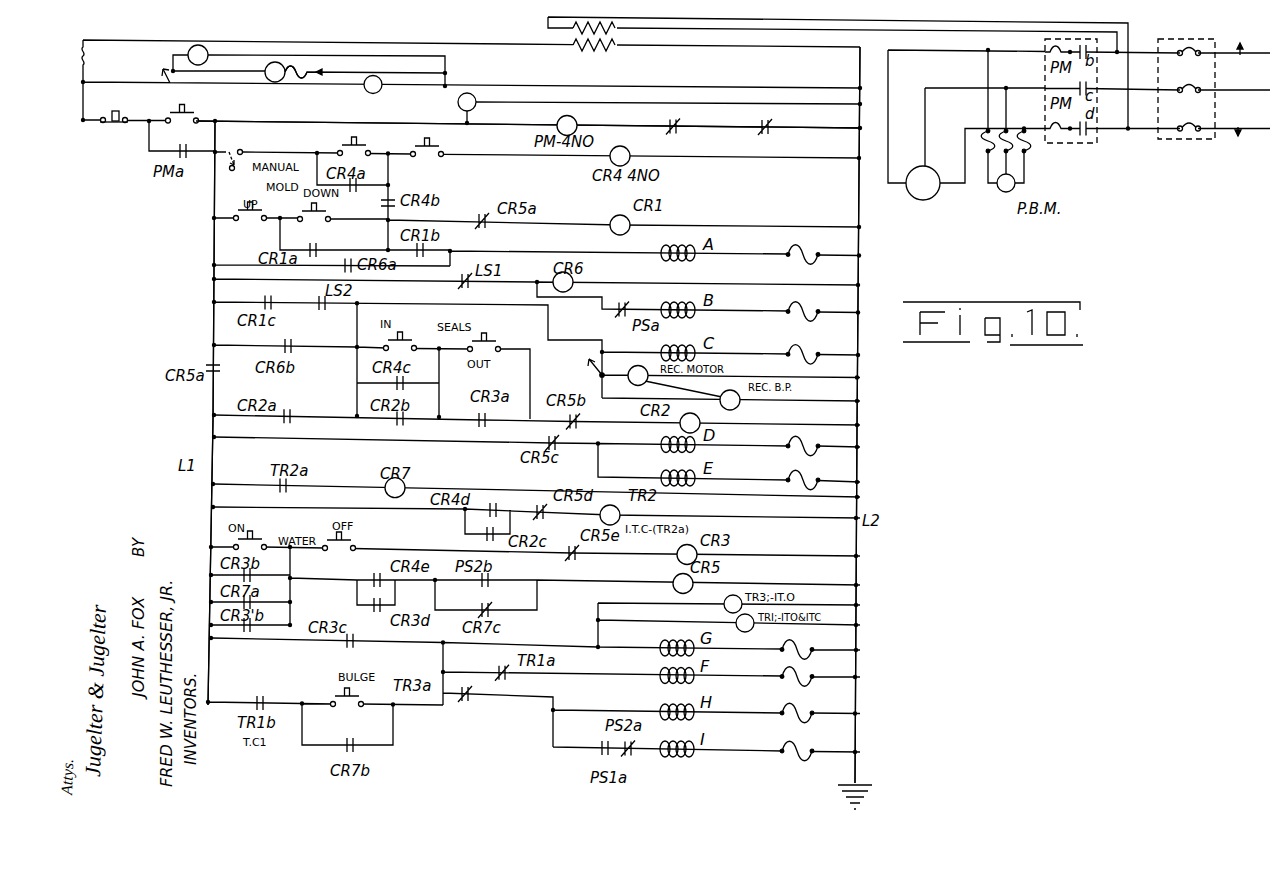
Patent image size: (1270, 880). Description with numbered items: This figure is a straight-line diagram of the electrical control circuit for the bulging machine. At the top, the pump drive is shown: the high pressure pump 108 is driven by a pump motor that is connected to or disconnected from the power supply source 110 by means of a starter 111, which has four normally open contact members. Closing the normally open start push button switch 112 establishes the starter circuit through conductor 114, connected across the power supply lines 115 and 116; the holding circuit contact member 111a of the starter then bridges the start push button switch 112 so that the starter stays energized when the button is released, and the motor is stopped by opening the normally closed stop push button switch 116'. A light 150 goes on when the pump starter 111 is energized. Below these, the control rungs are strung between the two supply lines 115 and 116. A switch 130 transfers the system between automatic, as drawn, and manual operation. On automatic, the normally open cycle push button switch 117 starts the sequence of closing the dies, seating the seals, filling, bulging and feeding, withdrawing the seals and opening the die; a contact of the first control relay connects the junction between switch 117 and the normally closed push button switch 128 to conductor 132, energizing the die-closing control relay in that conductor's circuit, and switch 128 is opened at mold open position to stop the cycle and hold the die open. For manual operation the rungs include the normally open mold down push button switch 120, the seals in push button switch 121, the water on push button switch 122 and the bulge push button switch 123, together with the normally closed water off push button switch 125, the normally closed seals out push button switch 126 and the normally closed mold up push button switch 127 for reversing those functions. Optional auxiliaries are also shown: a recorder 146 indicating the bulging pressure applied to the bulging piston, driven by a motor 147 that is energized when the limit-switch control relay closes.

The stop push button switch 116' is at (109, 106).
The start push button switch 112 is at (176, 105).
The holding circuit contact member 111a is at (187, 146).
The conductor 114 is at (270, 119).
The recorder 146 is at (280, 82).
The light 150 is at (462, 98).
The starter 111 is at (557, 118).
The manual-automatic switch 130 is at (226, 152).
The cycle push button switch 117 is at (345, 142).
The push button switch 128 is at (438, 158).
The power supply line 115 is at (214, 190).
The mold up push button switch 127 is at (250, 225).
The mold down push button switch 120 is at (327, 211).
The conductor 132 is at (468, 218).
The power supply line 116 is at (877, 415).
The high pressure pump 108 is at (923, 200).
The power supply source 110 is at (1208, 89).
The seals in push button switch 121 is at (408, 340).
The seals out push button switch 126 is at (492, 341).
The motor 147 is at (630, 375).
The water on push button switch 122 is at (252, 539).
The water off push button switch 125 is at (326, 553).
The bulge push button switch 123 is at (336, 695).